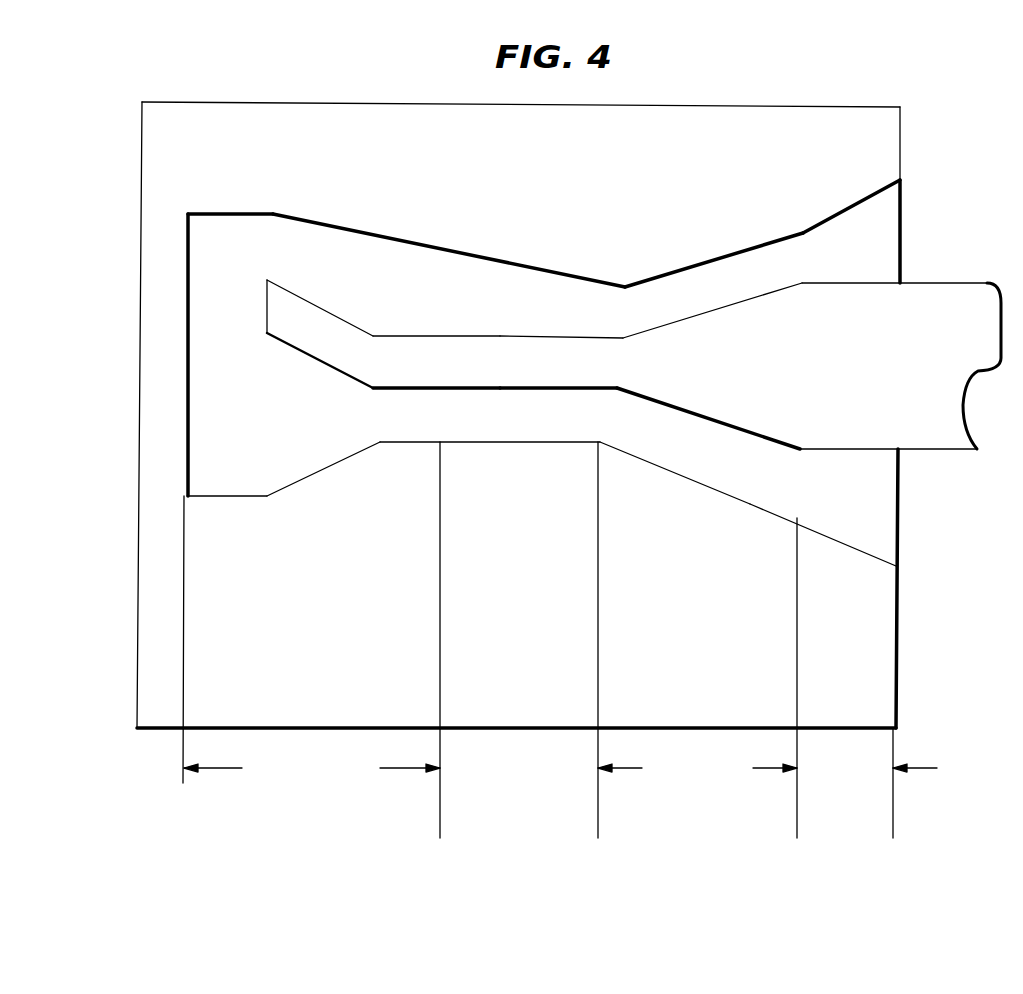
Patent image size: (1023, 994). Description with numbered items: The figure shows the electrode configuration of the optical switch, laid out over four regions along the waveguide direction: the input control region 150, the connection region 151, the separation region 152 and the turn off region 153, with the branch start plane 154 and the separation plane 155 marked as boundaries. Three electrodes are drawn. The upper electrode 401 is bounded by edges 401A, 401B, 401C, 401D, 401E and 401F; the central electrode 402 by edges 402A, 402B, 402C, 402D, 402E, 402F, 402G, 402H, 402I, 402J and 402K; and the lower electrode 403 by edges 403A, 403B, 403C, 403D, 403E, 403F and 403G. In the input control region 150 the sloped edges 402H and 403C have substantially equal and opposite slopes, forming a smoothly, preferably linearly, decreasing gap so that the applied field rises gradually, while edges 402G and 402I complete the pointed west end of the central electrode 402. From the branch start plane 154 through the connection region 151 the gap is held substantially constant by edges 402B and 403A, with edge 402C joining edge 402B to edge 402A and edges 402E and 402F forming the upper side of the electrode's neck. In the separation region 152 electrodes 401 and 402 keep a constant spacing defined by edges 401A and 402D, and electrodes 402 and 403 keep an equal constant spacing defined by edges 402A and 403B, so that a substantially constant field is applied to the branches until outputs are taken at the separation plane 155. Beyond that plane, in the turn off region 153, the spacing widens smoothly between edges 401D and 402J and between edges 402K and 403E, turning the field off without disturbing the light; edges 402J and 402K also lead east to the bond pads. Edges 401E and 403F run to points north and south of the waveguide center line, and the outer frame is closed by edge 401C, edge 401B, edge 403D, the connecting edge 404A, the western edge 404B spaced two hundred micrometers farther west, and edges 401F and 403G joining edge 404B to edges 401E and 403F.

The electrode 401 is at (604, 178).
The edge 401A is at (660, 275).
The edge 401B is at (250, 213).
The edge 401C is at (480, 255).
The edge 401D is at (866, 199).
The edge 401E is at (900, 160).
The edge 401F is at (800, 108).
The electrode 402 is at (914, 366).
The edge 402A is at (718, 421).
The edge 402B is at (458, 392).
The edge 402C is at (542, 387).
The edge 402D is at (751, 300).
The edge 402E is at (408, 336).
The edge 402F is at (513, 336).
The edge 402G is at (293, 294).
The edge 402H is at (346, 375).
The edge 402I is at (267, 300).
The edge 402J is at (918, 283).
The edge 402K is at (945, 451).
The electrode 403 is at (527, 613).
The edge 403A is at (540, 444).
The edge 403B is at (723, 489).
The edge 403C is at (344, 460).
The edge 403D is at (228, 497).
The edge 403E is at (848, 547).
The edge 403F is at (898, 640).
The edge 403G is at (510, 728).
The edge 404A is at (188, 296).
The edge 404B is at (138, 408).
The input control region 150 is at (312, 783).
The connection region 151 is at (532, 640).
The separation region 152 is at (697, 783).
The turn off region 153 is at (870, 783).
The branch start plane 154 is at (439, 669).
The separation plane 155 is at (796, 707).